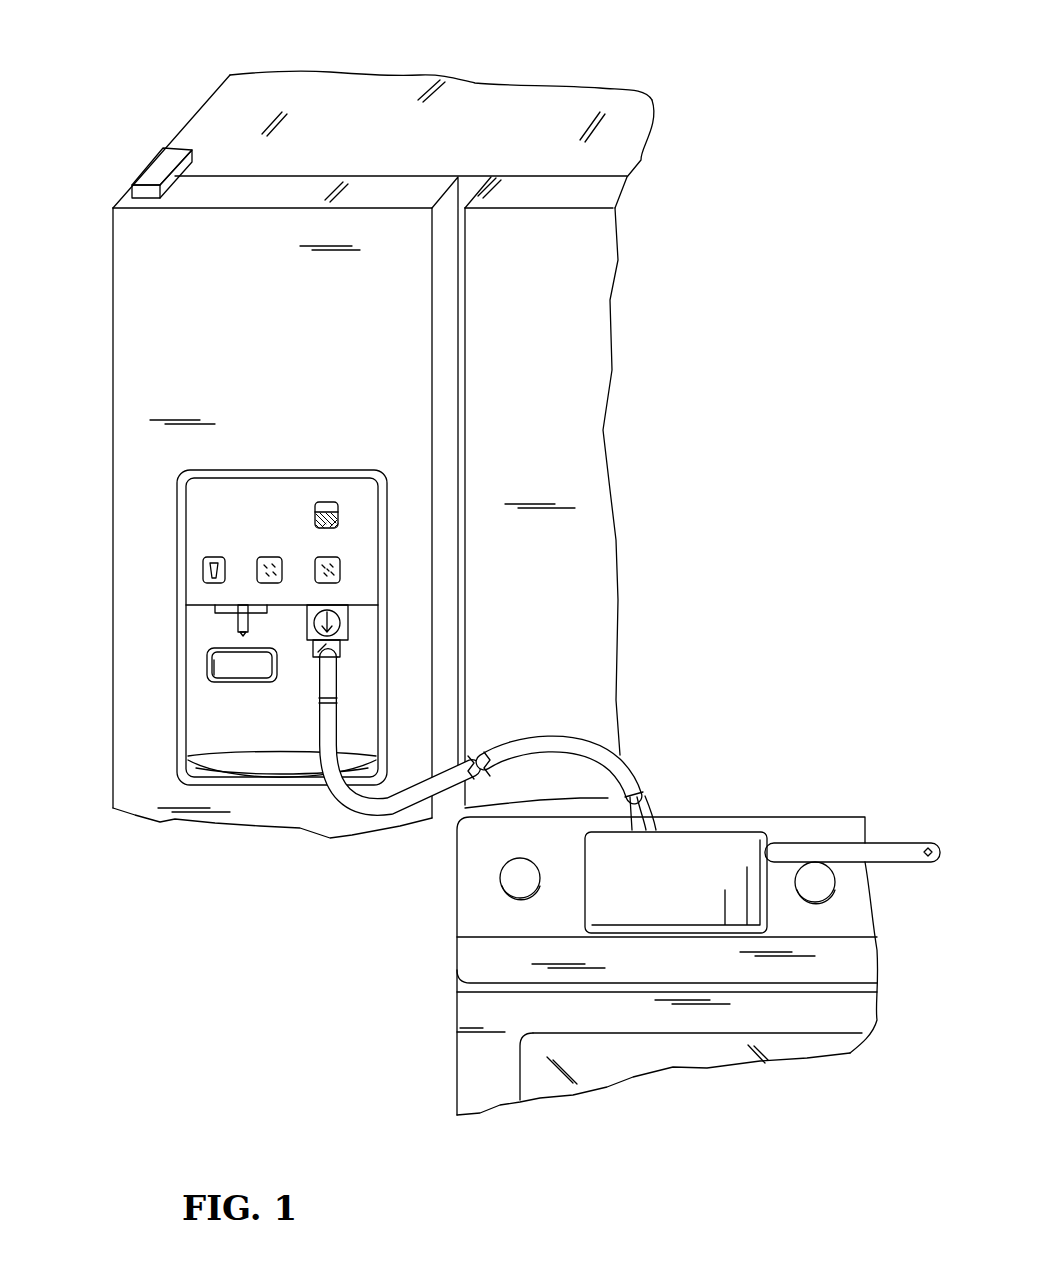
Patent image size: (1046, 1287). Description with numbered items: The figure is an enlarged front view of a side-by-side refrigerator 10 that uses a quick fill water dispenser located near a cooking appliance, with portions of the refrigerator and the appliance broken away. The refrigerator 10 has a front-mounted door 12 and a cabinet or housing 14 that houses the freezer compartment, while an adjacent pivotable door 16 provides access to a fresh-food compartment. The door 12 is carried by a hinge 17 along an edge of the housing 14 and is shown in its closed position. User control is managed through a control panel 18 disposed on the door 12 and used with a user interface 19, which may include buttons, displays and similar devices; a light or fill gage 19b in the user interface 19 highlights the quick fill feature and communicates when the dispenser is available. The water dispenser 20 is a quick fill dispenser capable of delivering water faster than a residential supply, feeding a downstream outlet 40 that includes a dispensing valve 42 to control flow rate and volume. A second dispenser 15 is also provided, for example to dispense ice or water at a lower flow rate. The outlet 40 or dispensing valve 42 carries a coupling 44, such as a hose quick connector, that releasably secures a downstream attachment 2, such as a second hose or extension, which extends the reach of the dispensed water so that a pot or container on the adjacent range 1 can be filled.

The range 1 is at (441, 1034).
The downstream attachment 2 is at (553, 747).
The refrigerator 10 is at (81, 213).
The door 12 is at (170, 294).
The cabinet or housing 14 is at (508, 128).
The second dispenser 15 is at (196, 630).
The pivotable door 16 is at (593, 387).
The hinge 17 is at (146, 162).
The control panel 18 is at (269, 463).
The user interface 19 is at (196, 533).
The light or fill gage 19b is at (340, 507).
The water dispenser 20 is at (365, 626).
The downstream outlet 40 is at (348, 656).
The dispensing valve 42 is at (352, 608).
The coupling 44 is at (326, 648).